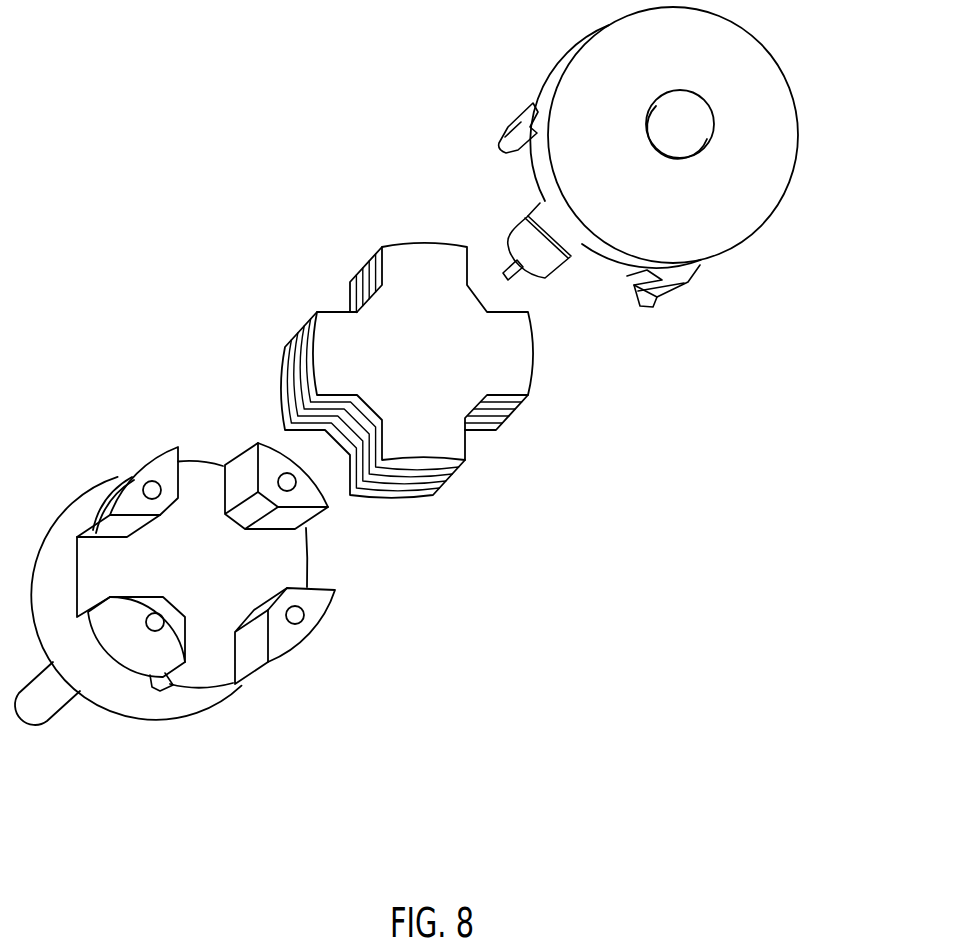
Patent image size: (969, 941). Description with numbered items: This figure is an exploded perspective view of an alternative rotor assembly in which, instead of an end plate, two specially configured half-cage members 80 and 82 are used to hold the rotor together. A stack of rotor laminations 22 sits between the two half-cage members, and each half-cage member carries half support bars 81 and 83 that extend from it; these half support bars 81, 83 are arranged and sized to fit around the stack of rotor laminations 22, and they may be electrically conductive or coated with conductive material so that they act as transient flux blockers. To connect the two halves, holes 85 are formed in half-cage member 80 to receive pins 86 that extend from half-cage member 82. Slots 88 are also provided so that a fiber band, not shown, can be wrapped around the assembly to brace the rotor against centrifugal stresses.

The stack of rotor laminations 22 is at (496, 464).
The half-cage member 80 is at (259, 697).
The half support bar 81 is at (110, 503).
The half-cage member 82 is at (795, 204).
The half support bar 83 is at (656, 300).
The holes 85 is at (143, 486).
The pins 86 is at (493, 146).
The slots 88 is at (568, 258).